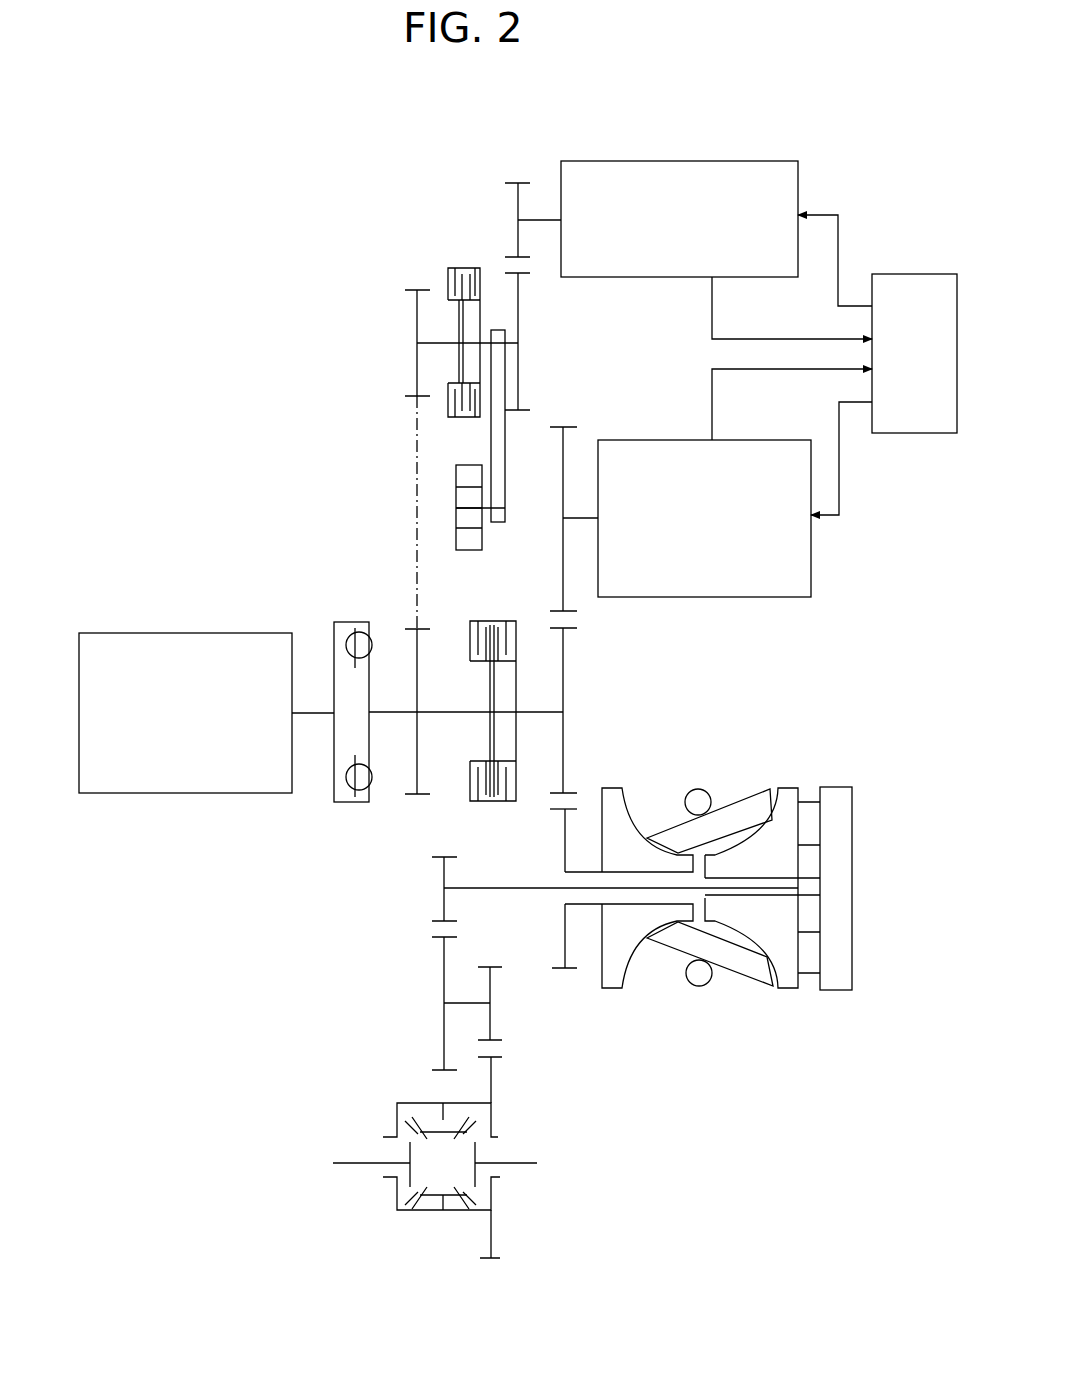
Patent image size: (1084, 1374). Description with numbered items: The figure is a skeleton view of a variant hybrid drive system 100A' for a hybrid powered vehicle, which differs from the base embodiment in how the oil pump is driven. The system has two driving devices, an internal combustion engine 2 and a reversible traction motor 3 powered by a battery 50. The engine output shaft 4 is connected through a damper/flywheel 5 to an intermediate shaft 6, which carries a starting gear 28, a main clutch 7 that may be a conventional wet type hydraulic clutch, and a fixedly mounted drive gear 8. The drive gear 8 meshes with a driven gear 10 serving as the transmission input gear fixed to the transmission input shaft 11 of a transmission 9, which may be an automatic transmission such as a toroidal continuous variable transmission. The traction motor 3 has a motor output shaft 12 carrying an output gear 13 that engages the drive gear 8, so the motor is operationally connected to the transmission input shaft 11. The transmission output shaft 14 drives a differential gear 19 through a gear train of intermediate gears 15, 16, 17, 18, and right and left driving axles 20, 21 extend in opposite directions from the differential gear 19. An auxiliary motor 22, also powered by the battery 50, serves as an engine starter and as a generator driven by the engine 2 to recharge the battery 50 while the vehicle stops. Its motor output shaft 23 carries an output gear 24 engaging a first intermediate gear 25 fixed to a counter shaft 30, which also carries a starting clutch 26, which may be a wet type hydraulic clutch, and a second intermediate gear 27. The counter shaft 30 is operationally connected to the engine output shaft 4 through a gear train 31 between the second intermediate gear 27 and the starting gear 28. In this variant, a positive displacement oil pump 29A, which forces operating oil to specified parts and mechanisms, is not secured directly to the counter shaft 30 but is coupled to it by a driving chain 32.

The hybrid drive system 100A' is at (193, 283).
The internal combustion engine 2 is at (95, 632).
The traction motor 3 is at (790, 440).
The engine output shaft 4 is at (308, 718).
The damper/flywheel 5 is at (333, 630).
The intermediate shaft 6 is at (447, 710).
The main clutch 7 is at (475, 620).
The drive gear 8 is at (575, 630).
The transmission 9 is at (729, 787).
The driven gear 10 is at (560, 810).
The transmission input shaft 11 is at (578, 870).
The motor output shaft 12 is at (565, 516).
The output gear 13 is at (568, 427).
The output shaft 14 is at (527, 890).
The intermediate gear 15 is at (438, 860).
The intermediate gear 16 is at (438, 940).
The intermediate gear 17 is at (500, 968).
The intermediate gear 18 is at (500, 1060).
The differential gear 19 is at (395, 1112).
The driving axle 20 is at (352, 1165).
The driving axle 21 is at (530, 1165).
The auxiliary motor 22 is at (775, 160).
The motor output shaft 23 is at (535, 218).
The output gear 24 is at (508, 183).
The first intermediate gear 25 is at (523, 408).
The starting clutch 26 is at (448, 268).
The second intermediate gear 27 is at (406, 290).
The starting gear 28 is at (408, 797).
The oil pump 29A is at (485, 550).
The counter shaft 30 is at (508, 343).
The gear train 31 is at (413, 520).
The driving chain 32 is at (507, 475).
The battery 50 is at (922, 272).